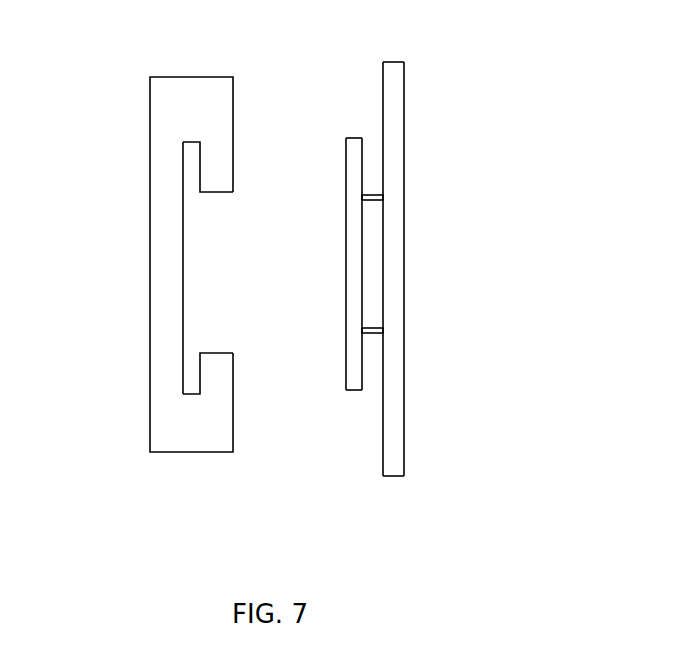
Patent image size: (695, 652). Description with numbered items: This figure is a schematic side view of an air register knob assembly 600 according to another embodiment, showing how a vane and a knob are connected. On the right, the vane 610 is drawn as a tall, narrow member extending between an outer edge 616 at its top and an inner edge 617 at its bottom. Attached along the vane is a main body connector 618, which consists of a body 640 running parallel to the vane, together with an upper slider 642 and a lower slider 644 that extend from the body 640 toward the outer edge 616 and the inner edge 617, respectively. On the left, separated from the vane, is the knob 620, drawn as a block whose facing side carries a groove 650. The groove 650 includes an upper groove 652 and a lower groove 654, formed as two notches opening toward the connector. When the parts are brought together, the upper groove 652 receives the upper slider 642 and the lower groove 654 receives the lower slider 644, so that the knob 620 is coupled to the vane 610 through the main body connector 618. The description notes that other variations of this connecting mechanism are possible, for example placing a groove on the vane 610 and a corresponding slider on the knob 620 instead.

The air register knob assembly 600 is at (497, 42).
The vane 610 is at (407, 128).
The outer edge 616 is at (395, 75).
The inner edge 617 is at (395, 448).
The main body connector 618 is at (363, 245).
The knob 620 is at (177, 78).
The body 640 is at (346, 258).
The upper slider 642 is at (360, 152).
The lower slider 644 is at (360, 368).
The groove 650 is at (193, 246).
The upper groove 652 is at (190, 170).
The lower groove 654 is at (192, 384).